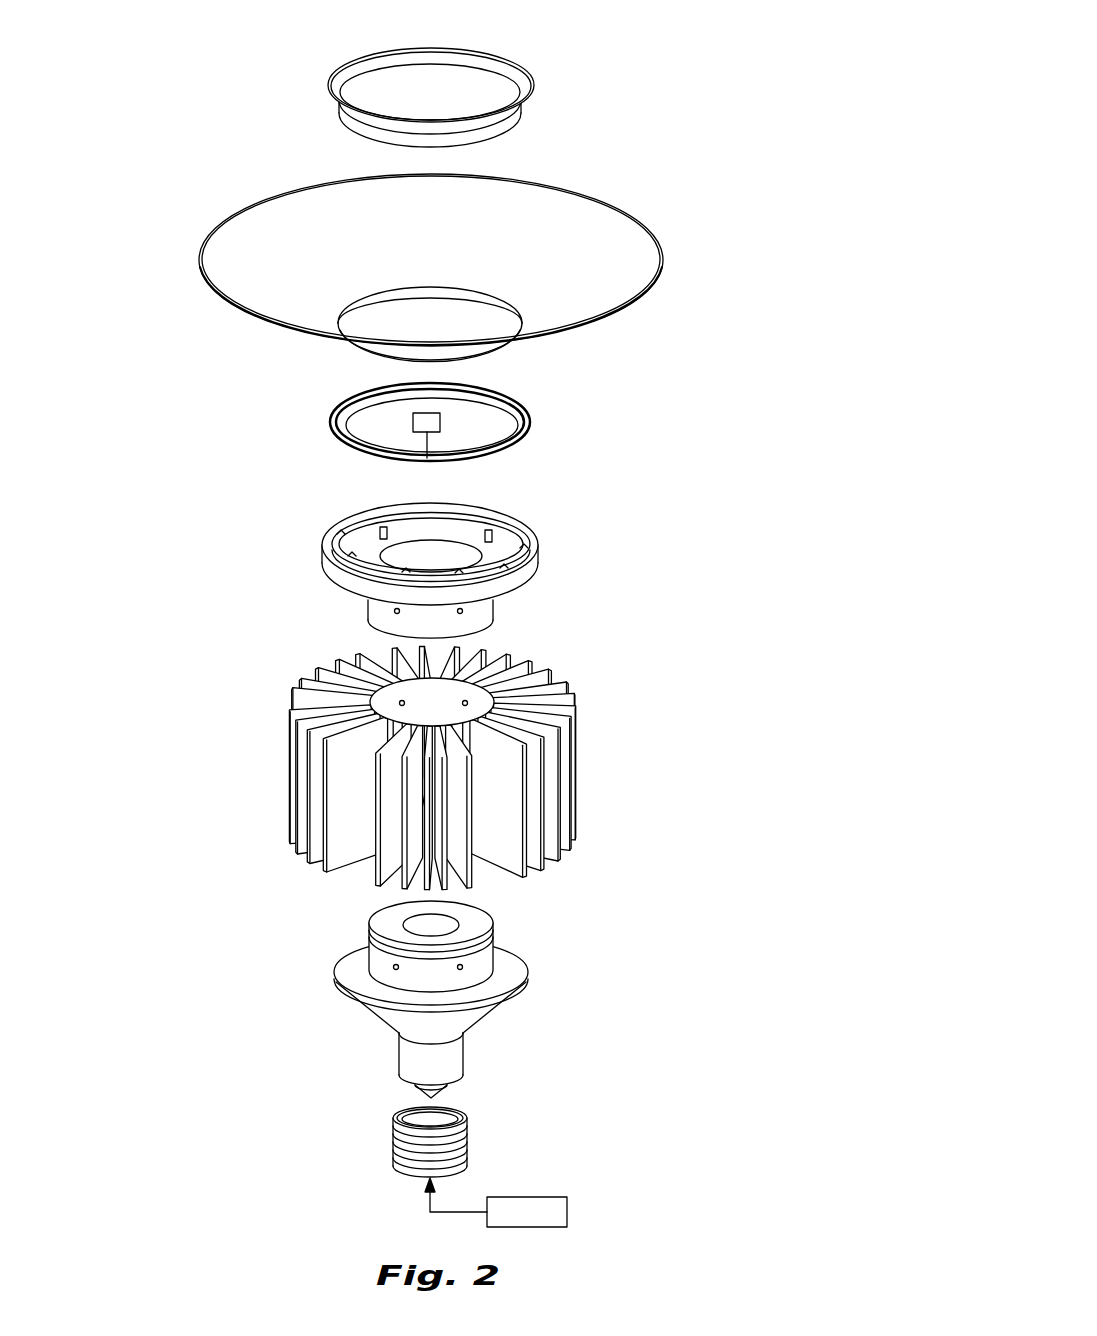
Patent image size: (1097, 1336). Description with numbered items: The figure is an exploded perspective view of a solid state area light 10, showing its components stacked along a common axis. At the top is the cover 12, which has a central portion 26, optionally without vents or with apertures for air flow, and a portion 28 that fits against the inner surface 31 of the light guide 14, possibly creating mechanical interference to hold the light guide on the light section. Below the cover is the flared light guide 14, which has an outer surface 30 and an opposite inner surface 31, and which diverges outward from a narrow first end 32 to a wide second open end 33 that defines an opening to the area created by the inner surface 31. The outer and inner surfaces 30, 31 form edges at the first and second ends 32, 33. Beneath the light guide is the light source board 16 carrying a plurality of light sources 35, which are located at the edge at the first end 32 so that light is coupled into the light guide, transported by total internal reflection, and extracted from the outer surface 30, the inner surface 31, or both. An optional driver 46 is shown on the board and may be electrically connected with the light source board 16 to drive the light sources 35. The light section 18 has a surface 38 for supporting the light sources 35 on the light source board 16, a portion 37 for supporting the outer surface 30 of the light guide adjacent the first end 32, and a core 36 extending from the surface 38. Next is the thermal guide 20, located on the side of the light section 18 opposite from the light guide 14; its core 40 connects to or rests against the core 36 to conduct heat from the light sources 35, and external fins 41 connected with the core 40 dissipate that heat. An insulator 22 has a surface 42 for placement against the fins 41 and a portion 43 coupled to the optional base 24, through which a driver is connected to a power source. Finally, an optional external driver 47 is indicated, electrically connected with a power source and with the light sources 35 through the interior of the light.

The solid state area light 10 is at (676, 28).
The cover 12 is at (427, 82).
The central portion 26 is at (380, 86).
The portion 28 is at (338, 97).
The light guide 14 is at (438, 269).
The inner surface 31 is at (272, 212).
The second open end 33 is at (213, 228).
The outer surface 30 is at (238, 310).
The first end 32 is at (343, 350).
The light source board 16 is at (443, 437).
The light sources 35 is at (372, 456).
The driver 46 is at (440, 420).
The light section 18 is at (432, 570).
The surface 38 is at (360, 537).
The portion 37 is at (328, 568).
The core 36 is at (487, 615).
The thermal guide 20 is at (463, 756).
The core 40 is at (393, 690).
The external fins 41 is at (550, 852).
The insulator 22 is at (425, 999).
The surface 42 is at (350, 958).
The portion 43 is at (405, 1060).
The base 24 is at (468, 1133).
The external driver 47 is at (568, 1212).